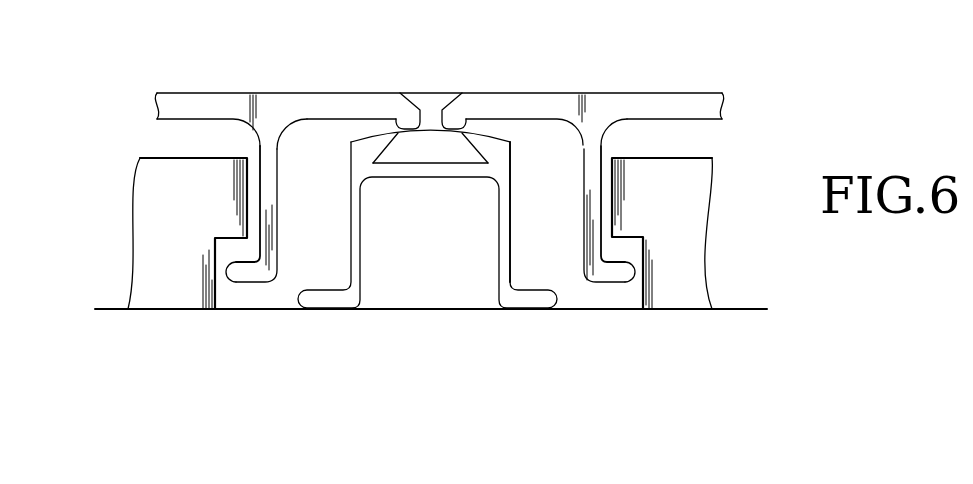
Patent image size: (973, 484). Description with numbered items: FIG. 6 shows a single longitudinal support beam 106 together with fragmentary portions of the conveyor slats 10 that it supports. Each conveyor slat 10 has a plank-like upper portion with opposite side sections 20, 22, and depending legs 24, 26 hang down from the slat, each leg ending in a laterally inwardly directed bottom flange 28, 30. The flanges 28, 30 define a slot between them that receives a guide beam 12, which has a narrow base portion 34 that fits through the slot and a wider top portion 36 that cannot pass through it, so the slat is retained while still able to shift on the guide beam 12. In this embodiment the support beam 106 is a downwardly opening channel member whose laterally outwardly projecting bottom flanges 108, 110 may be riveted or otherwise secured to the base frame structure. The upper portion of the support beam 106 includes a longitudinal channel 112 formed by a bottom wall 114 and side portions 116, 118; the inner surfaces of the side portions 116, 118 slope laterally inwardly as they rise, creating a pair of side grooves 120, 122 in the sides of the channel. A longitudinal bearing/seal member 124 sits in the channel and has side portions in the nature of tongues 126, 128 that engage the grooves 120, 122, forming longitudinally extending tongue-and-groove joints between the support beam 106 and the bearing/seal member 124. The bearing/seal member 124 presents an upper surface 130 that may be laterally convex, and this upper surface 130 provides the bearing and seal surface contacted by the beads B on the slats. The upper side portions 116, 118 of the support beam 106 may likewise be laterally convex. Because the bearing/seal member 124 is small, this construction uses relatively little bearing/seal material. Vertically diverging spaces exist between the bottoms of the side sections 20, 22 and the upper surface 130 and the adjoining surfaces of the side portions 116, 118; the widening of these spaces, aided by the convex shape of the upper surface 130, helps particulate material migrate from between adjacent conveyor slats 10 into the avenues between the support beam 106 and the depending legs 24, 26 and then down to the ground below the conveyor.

The conveyor slat 10 is at (174, 108).
The guide beam 12 is at (148, 298).
The side section 20 is at (461, 86).
The side section 22 is at (298, 108).
The depending leg 24 is at (579, 251).
The depending leg 26 is at (275, 250).
The bottom flange 28 is at (614, 277).
The bottom flange 30 is at (247, 277).
The base portion 34 is at (176, 300).
The top portion 36 is at (445, 240).
The support beam 106 is at (447, 199).
The bottom flange 108 is at (323, 302).
The bottom flange 110 is at (540, 303).
The longitudinal channel 112 is at (449, 163).
The bottom wall 114 is at (420, 170).
The side portion 116 is at (375, 150).
The side portion 118 is at (485, 145).
The side groove 120 is at (397, 117).
The side groove 122 is at (470, 127).
The bearing/seal member 124 is at (450, 128).
The tongue 126 is at (380, 162).
The tongue 128 is at (490, 165).
The upper surface 130 is at (433, 135).
The bead B is at (397, 152).